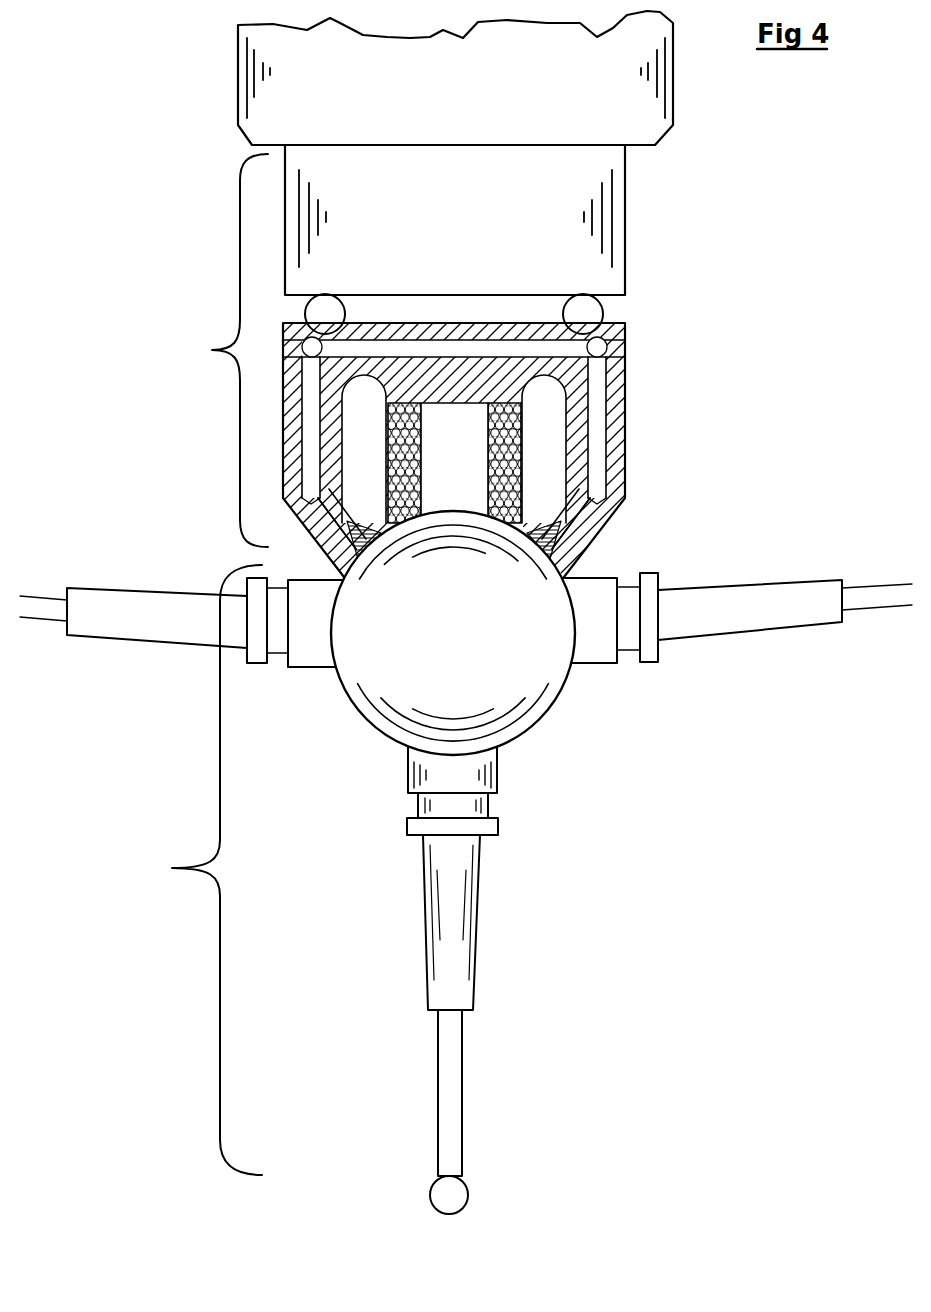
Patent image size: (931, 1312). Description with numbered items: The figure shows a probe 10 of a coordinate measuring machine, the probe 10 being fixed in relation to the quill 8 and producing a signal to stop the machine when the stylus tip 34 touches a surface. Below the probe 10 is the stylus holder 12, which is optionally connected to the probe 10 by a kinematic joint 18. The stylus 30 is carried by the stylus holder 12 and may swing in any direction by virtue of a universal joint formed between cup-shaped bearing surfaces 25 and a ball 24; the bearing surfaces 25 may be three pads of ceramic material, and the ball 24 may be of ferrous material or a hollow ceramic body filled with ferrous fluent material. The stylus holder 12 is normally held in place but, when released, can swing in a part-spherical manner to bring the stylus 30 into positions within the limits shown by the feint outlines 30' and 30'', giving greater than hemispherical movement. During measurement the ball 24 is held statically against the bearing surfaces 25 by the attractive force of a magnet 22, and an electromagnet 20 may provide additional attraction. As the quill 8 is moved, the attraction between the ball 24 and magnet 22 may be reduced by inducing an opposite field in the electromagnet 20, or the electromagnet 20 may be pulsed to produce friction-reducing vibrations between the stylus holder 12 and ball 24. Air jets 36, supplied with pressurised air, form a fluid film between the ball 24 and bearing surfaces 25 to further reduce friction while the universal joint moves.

The quill 8 is at (427, 129).
The probe 10 is at (402, 270).
The stylus holder 12 is at (212, 350).
The kinematic joint 18 is at (583, 308).
The electromagnet 20 is at (514, 427).
The magnet 22 is at (463, 448).
The ball 24 is at (465, 669).
The bearing surfaces 25 is at (358, 560).
The stylus 30 is at (293, 870).
The feint outline 30' is at (184, 622).
The feint outline 30'' is at (736, 618).
The stylus tip 34 is at (455, 1195).
The air jets 36 is at (350, 512).